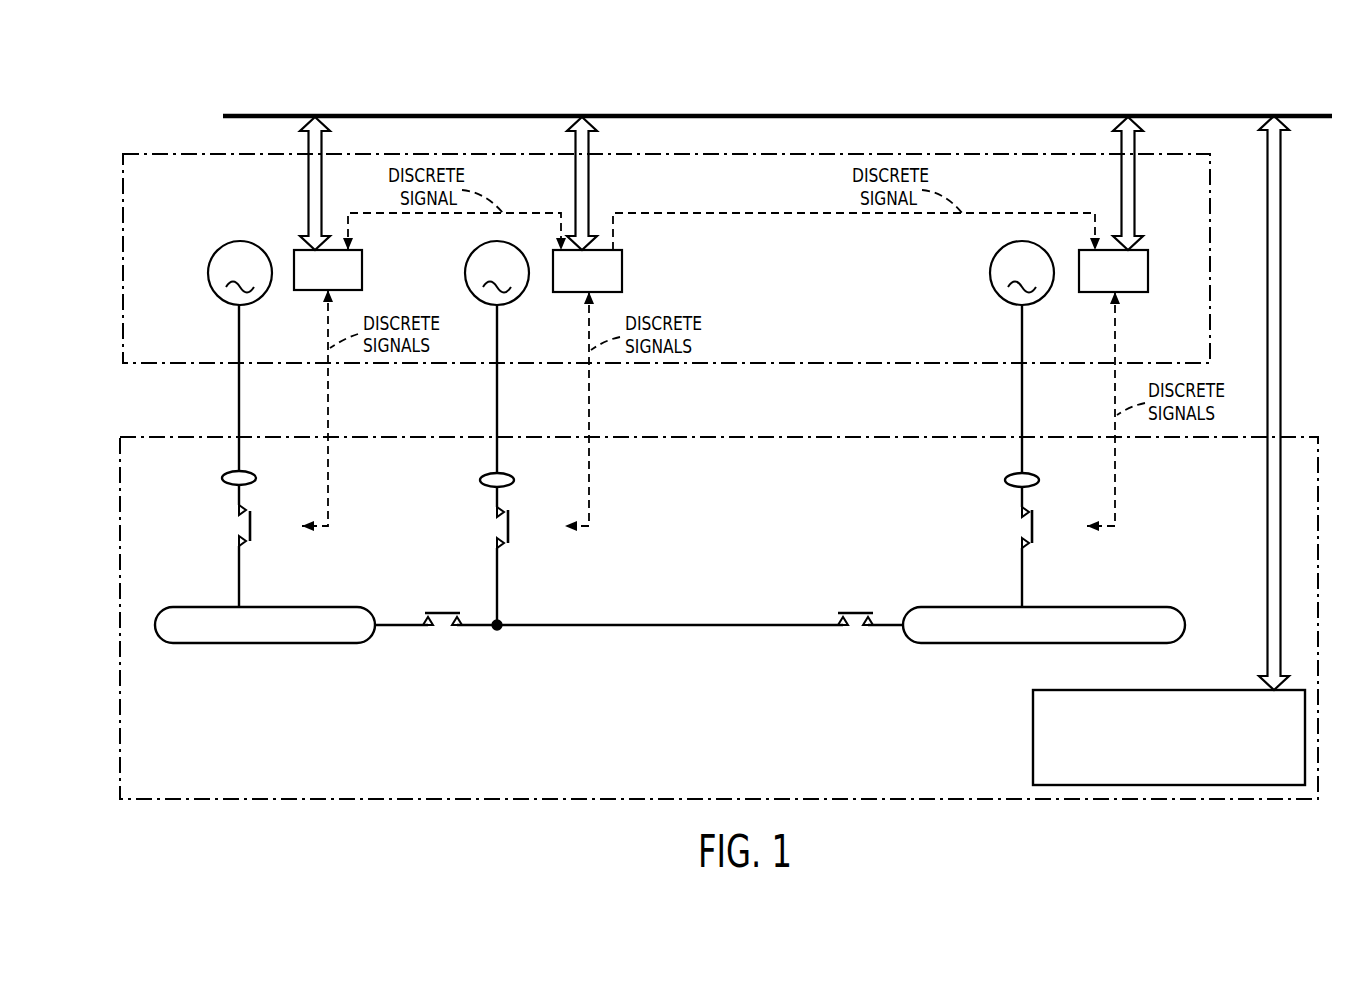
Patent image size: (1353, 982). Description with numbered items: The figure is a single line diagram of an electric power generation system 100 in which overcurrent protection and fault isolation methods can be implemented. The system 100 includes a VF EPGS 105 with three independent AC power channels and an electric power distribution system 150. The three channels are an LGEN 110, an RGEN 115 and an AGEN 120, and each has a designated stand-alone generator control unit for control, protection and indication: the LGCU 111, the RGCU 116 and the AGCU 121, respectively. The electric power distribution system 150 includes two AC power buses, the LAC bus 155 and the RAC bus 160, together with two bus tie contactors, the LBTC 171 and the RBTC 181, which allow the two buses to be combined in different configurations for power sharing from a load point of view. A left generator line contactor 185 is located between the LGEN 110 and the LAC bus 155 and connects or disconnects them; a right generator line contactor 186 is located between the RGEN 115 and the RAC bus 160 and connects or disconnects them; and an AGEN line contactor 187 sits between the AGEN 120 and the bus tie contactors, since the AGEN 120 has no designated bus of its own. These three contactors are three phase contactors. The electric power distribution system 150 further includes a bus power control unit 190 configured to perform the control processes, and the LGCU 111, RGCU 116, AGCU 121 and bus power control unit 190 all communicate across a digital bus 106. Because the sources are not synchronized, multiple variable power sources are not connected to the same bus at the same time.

The electric power generation system 100 is at (157, 94).
The VF EPGS 105 is at (122, 222).
The digital bus 106 is at (446, 114).
The LGEN 110 is at (208, 276).
The LGCU 111 is at (305, 291).
The RGEN 115 is at (991, 276).
The RGCU 116 is at (1097, 293).
The AGEN 120 is at (466, 276).
The AGCU 121 is at (562, 293).
The electric power distribution system 150 is at (118, 505).
The LAC bus 155 is at (265, 645).
The RAC bus 160 is at (975, 645).
The LBTC 171 is at (442, 628).
The RBTC 181 is at (855, 628).
The left generator line contactor 185 is at (238, 528).
The right generator line contactor 186 is at (1021, 528).
The AGEN line contactor 187 is at (496, 528).
The bus power control unit 190 is at (1033, 736).